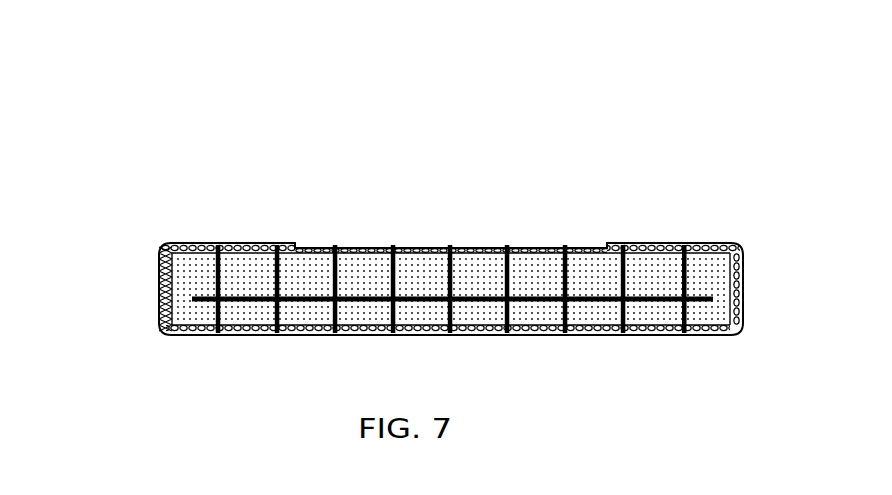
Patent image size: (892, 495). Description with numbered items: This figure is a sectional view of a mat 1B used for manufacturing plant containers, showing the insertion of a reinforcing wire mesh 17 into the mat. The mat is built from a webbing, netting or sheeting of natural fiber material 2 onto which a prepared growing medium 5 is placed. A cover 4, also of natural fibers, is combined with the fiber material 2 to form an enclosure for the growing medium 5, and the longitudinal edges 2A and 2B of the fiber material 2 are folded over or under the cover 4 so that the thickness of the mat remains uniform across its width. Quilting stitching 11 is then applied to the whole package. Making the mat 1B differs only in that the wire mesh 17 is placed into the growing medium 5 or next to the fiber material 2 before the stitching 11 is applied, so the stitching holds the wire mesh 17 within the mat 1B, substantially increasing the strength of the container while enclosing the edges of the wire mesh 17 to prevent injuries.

The mat 1B is at (660, 135).
The natural fiber material 2 is at (160, 300).
The longitudinal edge 2A is at (250, 243).
The longitudinal edge 2B is at (703, 248).
The cover 4 is at (432, 248).
The growing medium 5 is at (543, 272).
The quilting stitching 11 is at (338, 248).
The reinforcing wire mesh 17 is at (712, 302).